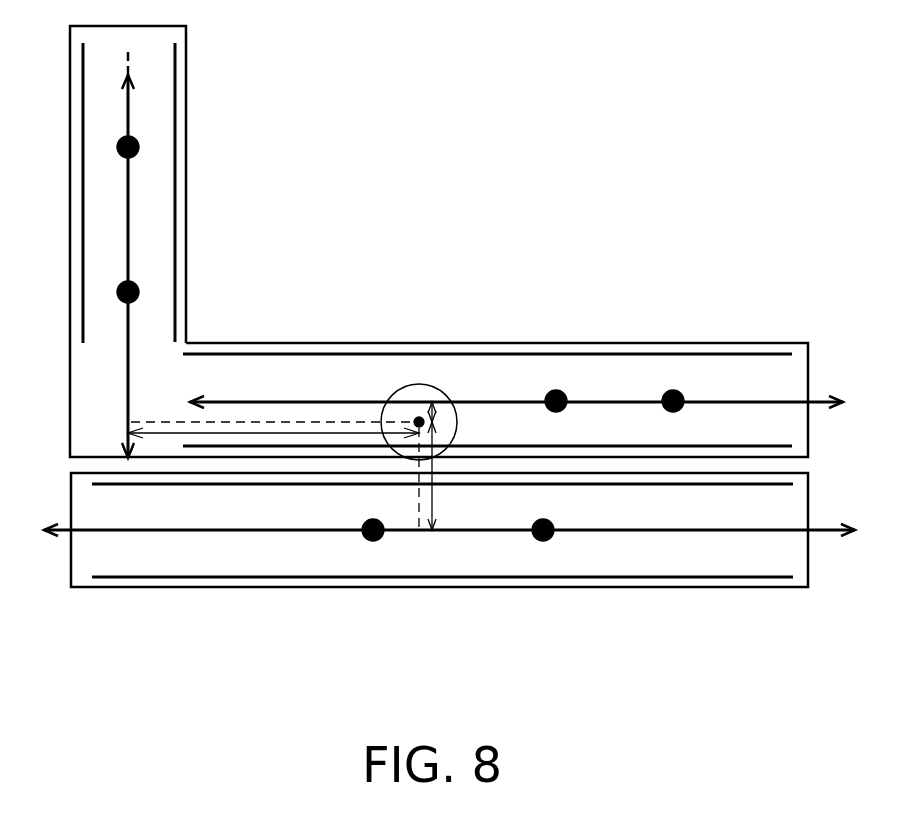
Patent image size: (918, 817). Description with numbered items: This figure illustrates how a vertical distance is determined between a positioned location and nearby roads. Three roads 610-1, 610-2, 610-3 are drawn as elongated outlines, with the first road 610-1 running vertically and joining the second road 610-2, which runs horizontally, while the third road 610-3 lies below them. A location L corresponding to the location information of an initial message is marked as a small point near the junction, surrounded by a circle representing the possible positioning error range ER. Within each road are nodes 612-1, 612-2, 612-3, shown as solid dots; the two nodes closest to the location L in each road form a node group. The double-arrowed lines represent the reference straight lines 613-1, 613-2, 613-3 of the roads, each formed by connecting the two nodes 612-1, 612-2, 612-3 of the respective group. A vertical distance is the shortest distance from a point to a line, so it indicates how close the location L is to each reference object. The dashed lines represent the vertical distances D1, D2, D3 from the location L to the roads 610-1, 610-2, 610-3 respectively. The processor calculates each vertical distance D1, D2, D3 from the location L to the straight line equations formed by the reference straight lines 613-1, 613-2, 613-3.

The road 610-1 is at (175, 87).
The road 610-2 is at (502, 353).
The road 610-3 is at (643, 578).
The nodes 612-1 is at (139, 149).
The nodes 612-2 is at (556, 389).
The nodes 612-3 is at (377, 541).
The reference straight line 613-1 is at (128, 206).
The reference straight line 613-2 is at (260, 398).
The reference straight line 613-3 is at (195, 532).
The positioning error range ER is at (427, 384).
The location L is at (419, 420).
The vertical distance D1 is at (172, 433).
The vertical distance D2 is at (434, 416).
The vertical distance D3 is at (434, 496).